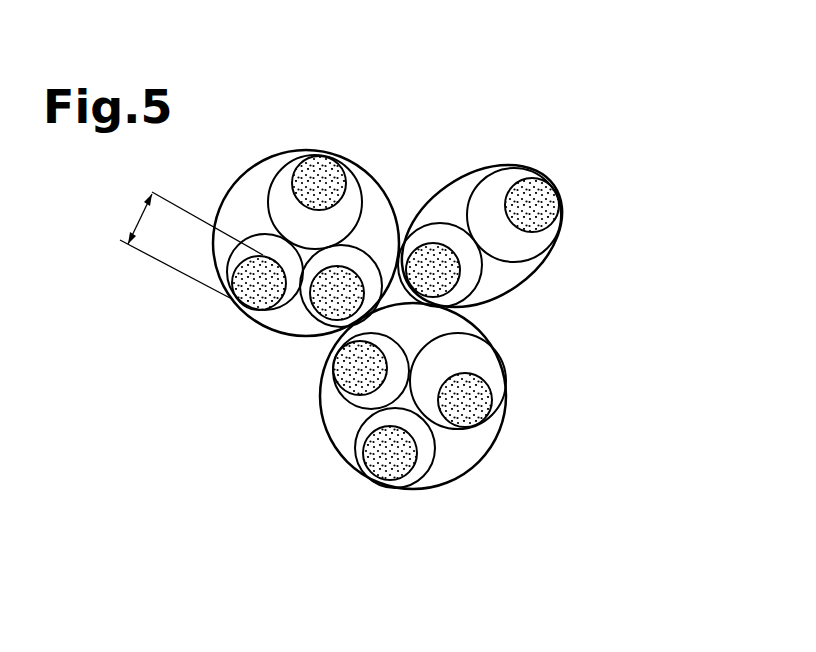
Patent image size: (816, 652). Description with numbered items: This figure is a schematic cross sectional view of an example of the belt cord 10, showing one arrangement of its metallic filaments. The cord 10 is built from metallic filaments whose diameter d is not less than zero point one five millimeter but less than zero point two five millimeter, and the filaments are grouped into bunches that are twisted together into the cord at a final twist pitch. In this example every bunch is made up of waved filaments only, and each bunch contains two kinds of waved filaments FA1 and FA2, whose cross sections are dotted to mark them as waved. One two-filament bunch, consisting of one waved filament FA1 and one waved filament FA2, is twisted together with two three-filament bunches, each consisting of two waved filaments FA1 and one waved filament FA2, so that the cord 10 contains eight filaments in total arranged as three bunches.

The belt cord 10 is at (620, 194).
The waved filament FA1 is at (455, 272).
The waved filament FA2 is at (528, 187).
The filament diameter d is at (191, 245).